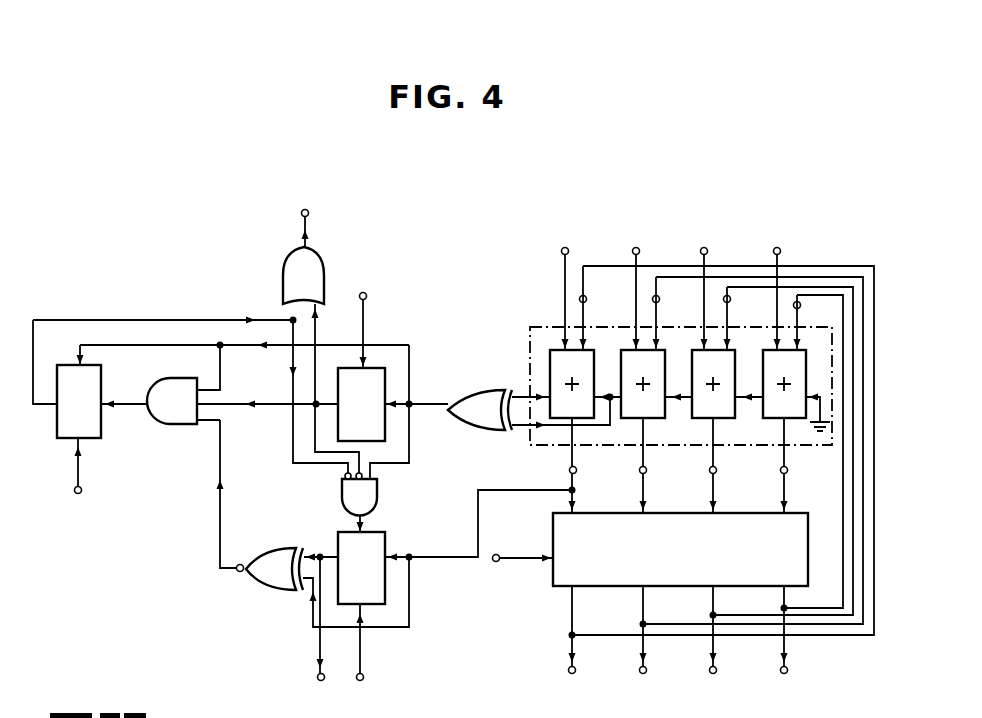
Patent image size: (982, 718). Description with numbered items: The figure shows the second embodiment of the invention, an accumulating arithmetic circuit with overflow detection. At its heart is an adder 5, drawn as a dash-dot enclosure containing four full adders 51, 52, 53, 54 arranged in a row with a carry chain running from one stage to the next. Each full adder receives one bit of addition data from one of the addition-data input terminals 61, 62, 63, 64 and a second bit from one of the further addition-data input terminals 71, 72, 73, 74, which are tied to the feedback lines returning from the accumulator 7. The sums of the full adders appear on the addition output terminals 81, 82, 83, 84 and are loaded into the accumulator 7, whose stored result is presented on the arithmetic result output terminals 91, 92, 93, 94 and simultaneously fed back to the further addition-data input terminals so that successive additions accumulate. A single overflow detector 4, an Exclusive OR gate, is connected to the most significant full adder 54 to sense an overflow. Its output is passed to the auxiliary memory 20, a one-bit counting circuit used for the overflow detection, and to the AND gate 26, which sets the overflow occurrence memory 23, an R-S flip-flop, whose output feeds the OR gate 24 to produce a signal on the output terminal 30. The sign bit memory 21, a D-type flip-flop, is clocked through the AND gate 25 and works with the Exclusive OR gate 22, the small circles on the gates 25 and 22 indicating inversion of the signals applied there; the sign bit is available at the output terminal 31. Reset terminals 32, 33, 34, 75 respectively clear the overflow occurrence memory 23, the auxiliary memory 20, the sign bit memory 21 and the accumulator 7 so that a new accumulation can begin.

The overflow detector 4 is at (481, 386).
The adder 5 is at (526, 447).
The accumulator 7 is at (553, 590).
The auxiliary memory 20 is at (385, 388).
The sign bit memory 21 is at (388, 540).
The Exclusive OR gate 22 is at (284, 592).
The overflow occurrence memory 23 is at (58, 438).
The OR gate 24 is at (325, 282).
The AND gate 25 is at (340, 502).
The AND gate 26 is at (178, 424).
The output terminal 30 is at (310, 214).
The output terminal 31 is at (318, 681).
The reset terminal 32 is at (78, 494).
The reset terminal 33 is at (367, 296).
The reset terminal 34 is at (361, 681).
The full adder 51 is at (806, 366).
The full adder 52 is at (735, 362).
The full adder 53 is at (665, 362).
The full adder 54 is at (594, 362).
The addition-data input terminal 61 is at (776, 247).
The addition-data input terminal 62 is at (703, 247).
The addition-data input terminal 63 is at (635, 247).
The addition-data input terminal 64 is at (564, 247).
The further addition-data input terminal 71 is at (801, 305).
The further addition-data input terminal 72 is at (731, 299).
The further addition-data input terminal 73 is at (660, 299).
The further addition-data input terminal 74 is at (587, 299).
The reset terminal 75 is at (513, 564).
The addition output terminal 81 is at (788, 472).
The addition output terminal 82 is at (717, 472).
The addition output terminal 83 is at (647, 472).
The addition output terminal 84 is at (577, 472).
The arithmetic result output terminal 91 is at (784, 674).
The arithmetic result output terminal 92 is at (713, 674).
The arithmetic result output terminal 93 is at (643, 674).
The arithmetic result output terminal 94 is at (572, 674).